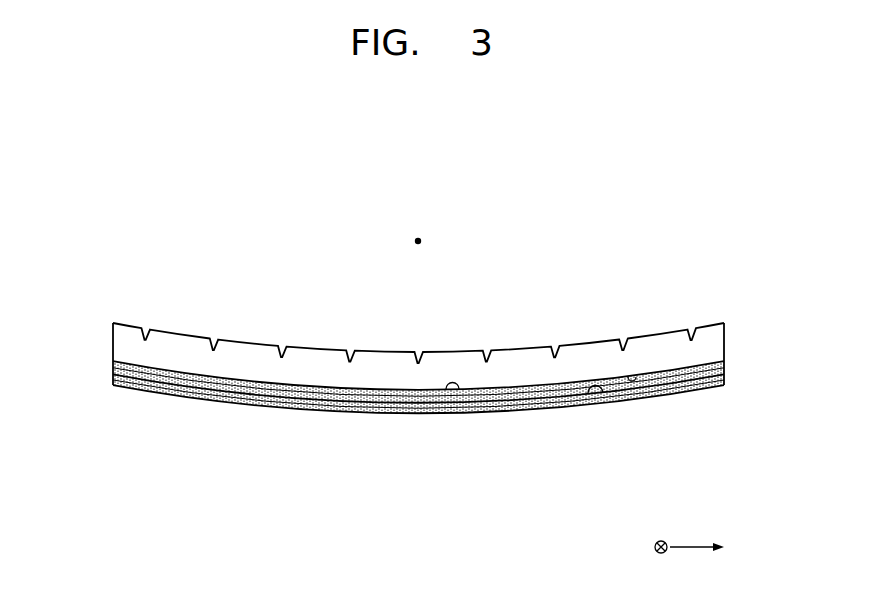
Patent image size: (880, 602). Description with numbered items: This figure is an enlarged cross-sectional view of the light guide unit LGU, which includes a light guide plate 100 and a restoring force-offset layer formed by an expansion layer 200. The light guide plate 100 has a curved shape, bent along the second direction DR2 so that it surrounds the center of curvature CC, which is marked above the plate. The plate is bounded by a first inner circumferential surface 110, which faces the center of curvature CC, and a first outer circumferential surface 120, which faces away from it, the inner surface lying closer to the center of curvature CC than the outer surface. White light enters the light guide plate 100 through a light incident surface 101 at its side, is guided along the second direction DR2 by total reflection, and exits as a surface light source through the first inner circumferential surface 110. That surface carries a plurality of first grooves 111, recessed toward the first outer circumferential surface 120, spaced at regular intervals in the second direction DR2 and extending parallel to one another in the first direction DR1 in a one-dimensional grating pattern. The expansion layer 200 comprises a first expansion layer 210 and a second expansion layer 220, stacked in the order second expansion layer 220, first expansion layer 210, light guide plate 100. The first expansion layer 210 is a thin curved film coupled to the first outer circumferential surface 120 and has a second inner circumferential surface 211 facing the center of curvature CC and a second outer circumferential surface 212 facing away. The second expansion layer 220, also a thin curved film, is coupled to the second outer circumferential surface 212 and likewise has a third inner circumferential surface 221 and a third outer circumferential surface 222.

The light guide plate 100 is at (655, 270).
The light incident surface 101 is at (113, 341).
The first inner circumferential surface 110 is at (569, 345).
The first grooves 111 is at (484, 342).
The first outer circumferential surface 120 is at (628, 377).
The expansion layer 200 is at (741, 371).
The first expansion layer 210 is at (530, 470).
The second inner circumferential surface 211 is at (459, 389).
The second outer circumferential surface 212 is at (511, 396).
The second expansion layer 220 is at (673, 470).
The third inner circumferential surface 221 is at (603, 393).
The third outer circumferential surface 222 is at (653, 398).
The center of curvature CC is at (418, 241).
The light guide unit LGU is at (675, 203).
The first direction DR1 is at (663, 563).
The second direction DR2 is at (720, 549).